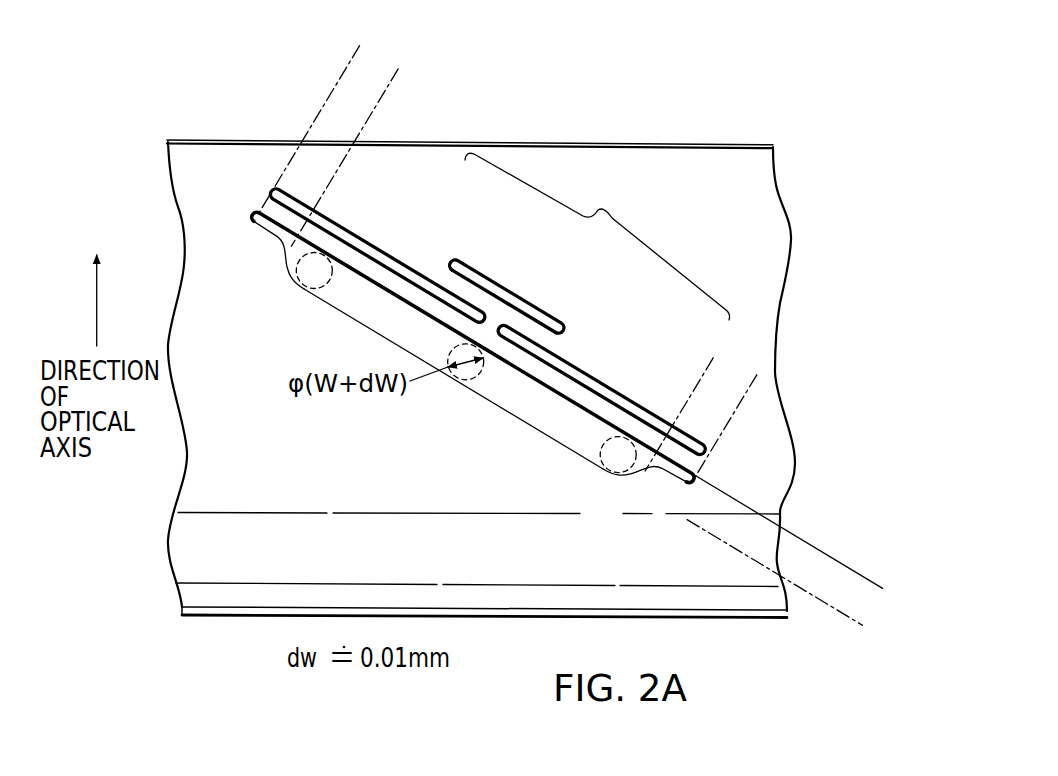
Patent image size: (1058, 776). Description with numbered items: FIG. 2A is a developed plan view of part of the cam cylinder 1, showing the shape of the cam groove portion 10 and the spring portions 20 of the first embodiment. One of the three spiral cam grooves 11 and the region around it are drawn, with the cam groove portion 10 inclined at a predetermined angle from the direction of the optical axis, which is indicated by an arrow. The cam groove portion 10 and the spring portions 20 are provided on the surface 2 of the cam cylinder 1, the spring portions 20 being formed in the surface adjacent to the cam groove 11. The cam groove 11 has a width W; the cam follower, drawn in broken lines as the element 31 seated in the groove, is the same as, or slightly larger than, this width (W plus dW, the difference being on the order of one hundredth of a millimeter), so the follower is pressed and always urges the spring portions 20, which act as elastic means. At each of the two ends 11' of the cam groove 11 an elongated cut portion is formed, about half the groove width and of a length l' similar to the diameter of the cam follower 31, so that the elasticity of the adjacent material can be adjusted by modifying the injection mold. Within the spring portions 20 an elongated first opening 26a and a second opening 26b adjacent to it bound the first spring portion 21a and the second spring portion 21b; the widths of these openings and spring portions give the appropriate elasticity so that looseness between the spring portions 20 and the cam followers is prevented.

The cam cylinder 1 is at (249, 106).
The surface of the cam cylinder 2 is at (723, 168).
The cam groove portion 10 is at (368, 458).
The spring portion 20 is at (633, 204).
The cam groove 11 is at (453, 382).
The end of cam groove 11' is at (454, 382).
The first spring portion 21a is at (366, 263).
The second spring portion 21b is at (540, 330).
The first opening 26a is at (422, 273).
The second opening 26b is at (502, 293).
The ball 31 is at (466, 382).
The width of cam groove W is at (832, 618).
The length of cut portion l' is at (507, 257).